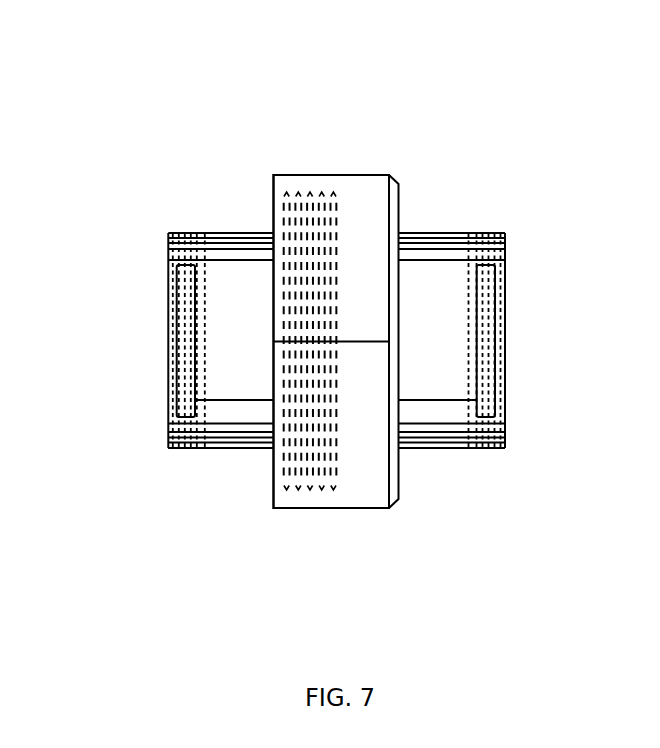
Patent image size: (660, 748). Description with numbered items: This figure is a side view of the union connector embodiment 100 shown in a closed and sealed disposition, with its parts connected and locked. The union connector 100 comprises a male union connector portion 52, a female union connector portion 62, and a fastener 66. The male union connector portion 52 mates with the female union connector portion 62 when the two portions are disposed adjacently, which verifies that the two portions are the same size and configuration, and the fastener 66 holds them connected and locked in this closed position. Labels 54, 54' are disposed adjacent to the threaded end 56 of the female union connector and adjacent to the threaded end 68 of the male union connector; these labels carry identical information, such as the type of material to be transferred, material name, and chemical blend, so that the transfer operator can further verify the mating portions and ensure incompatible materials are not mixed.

The union connector 100 is at (172, 131).
The male union connector portion 52 is at (471, 206).
The label 54 is at (558, 341).
The label 54' is at (111, 341).
The threaded end of union female connector 56 is at (170, 372).
The female union connector portion 62 is at (214, 475).
The fastener 66 is at (360, 508).
The threaded end of union male connector 68 is at (505, 410).